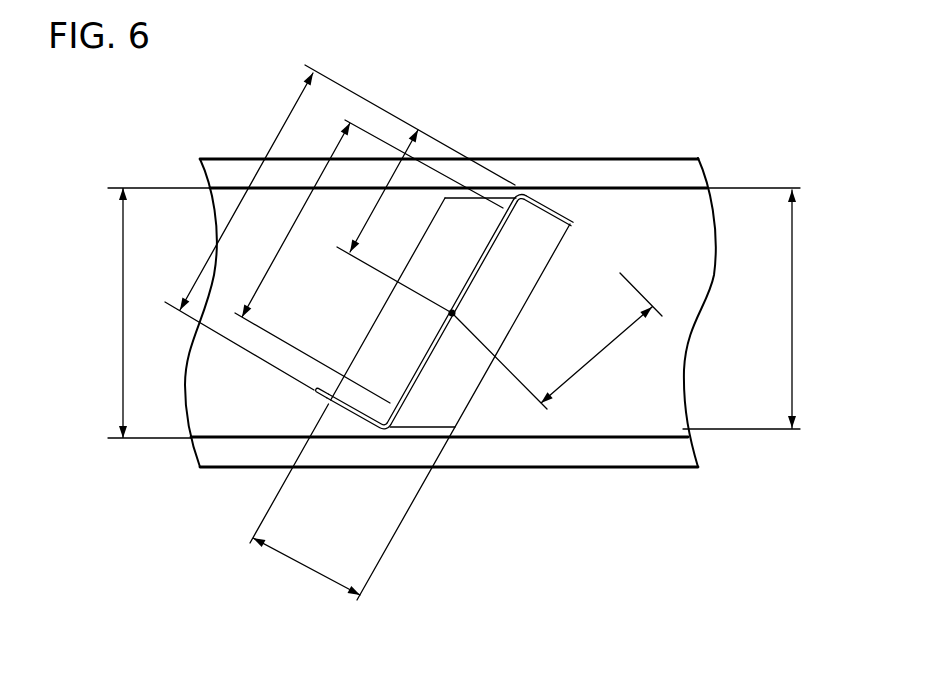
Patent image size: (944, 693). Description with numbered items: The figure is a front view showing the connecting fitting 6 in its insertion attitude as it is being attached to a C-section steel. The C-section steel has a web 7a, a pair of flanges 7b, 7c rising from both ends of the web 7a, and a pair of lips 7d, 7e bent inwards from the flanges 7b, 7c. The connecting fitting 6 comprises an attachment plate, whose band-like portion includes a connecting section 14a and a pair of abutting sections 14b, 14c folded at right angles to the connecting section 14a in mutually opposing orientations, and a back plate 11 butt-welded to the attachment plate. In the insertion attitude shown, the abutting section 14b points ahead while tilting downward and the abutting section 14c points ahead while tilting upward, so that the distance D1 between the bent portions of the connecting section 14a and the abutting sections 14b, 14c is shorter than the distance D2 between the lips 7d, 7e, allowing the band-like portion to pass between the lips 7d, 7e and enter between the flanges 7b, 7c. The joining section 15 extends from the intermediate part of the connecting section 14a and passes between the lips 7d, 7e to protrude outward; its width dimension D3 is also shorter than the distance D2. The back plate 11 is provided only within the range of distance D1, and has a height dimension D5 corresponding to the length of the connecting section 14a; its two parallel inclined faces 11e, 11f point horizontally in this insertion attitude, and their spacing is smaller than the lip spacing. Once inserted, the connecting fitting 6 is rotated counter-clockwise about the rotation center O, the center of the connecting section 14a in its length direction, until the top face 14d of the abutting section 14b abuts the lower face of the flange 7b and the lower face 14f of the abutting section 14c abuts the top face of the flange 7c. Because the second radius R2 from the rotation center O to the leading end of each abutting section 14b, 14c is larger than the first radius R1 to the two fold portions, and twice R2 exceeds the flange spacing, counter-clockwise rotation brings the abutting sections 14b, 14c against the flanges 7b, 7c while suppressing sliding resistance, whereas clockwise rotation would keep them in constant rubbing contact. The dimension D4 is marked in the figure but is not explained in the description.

The connecting fitting 6 is at (418, 348).
The web 7a is at (677, 335).
The flange 7b is at (643, 158).
The flange 7c is at (622, 468).
The lip 7d is at (693, 175).
The lip 7e is at (683, 447).
The back plate 11 is at (464, 348).
The inclined face 11e is at (500, 197).
The inclined face 11f is at (403, 428).
The connecting section 14a is at (405, 380).
The abutting section 14b is at (572, 227).
The abutting section 14c is at (313, 393).
The top face 14d is at (537, 202).
The lower face 14f is at (358, 422).
The joining section 15 is at (407, 312).
The rotation center O is at (452, 316).
The distance between bent portions D1 is at (756, 308).
The distance between lips D2 is at (147, 313).
The width dimension of joining section D3 is at (369, 261).
The dimension D4 is at (305, 499).
The height dimension of back plate D5 is at (340, 227).
The first radius R1 is at (394, 221).
The second radius R2 is at (557, 341).